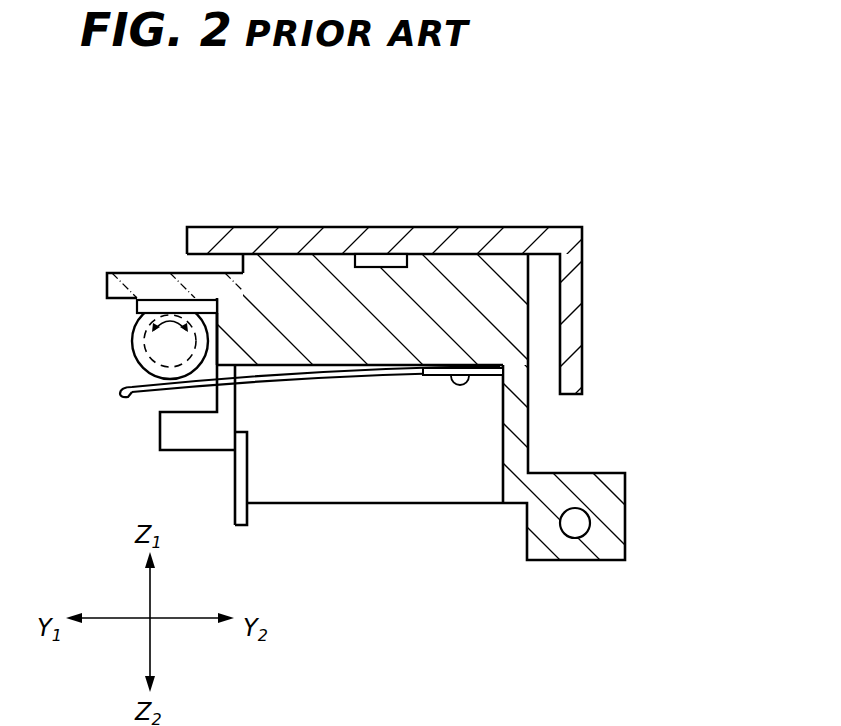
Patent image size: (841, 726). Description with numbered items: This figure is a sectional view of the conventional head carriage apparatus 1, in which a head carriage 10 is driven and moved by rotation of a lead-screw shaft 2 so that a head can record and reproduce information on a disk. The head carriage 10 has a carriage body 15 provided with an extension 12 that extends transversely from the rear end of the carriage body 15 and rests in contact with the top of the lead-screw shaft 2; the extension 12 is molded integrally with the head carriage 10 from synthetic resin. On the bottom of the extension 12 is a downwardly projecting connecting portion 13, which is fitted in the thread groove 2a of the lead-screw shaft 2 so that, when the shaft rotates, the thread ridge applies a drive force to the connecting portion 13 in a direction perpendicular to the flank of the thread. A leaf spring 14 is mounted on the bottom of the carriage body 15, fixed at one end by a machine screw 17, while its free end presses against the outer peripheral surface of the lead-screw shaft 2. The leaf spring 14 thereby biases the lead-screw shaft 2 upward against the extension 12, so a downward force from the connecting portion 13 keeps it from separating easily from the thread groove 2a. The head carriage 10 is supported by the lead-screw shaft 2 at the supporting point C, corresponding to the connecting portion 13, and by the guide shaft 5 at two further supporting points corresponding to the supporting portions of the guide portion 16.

The head carriage apparatus 1 is at (527, 90).
The lead-screw shaft 2 is at (116, 371).
The thread groove 2a is at (133, 341).
The guide shaft 5 is at (583, 524).
The head carriage 10 is at (440, 221).
The extension 12 is at (128, 272).
The connecting portion 13 is at (137, 305).
The leaf spring 14 is at (298, 378).
The carriage body 15 is at (292, 265).
The guide portion 16 is at (450, 500).
The machine screw 17 is at (460, 387).
The supporting point C is at (171, 302).